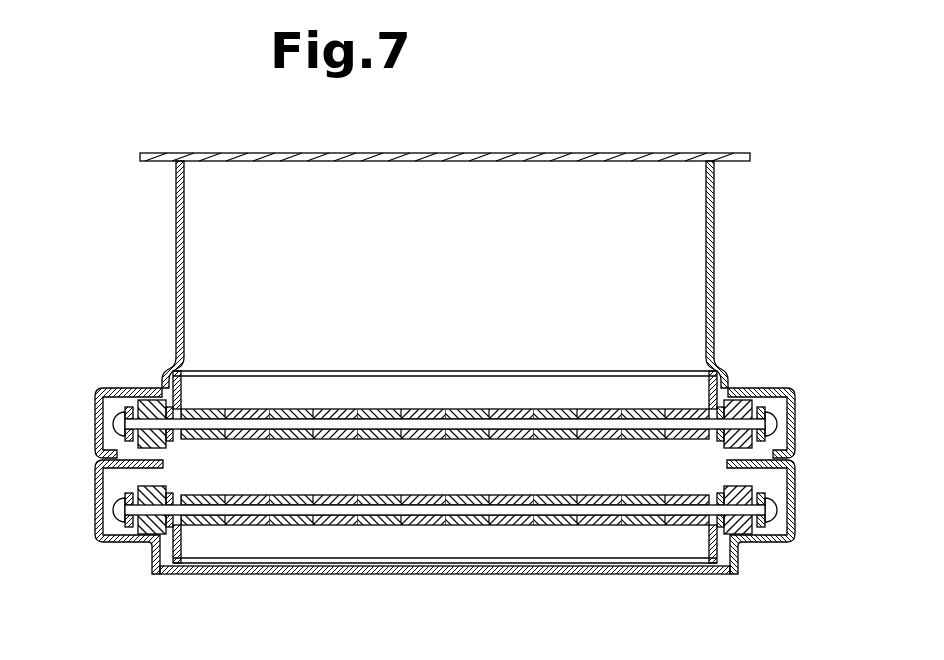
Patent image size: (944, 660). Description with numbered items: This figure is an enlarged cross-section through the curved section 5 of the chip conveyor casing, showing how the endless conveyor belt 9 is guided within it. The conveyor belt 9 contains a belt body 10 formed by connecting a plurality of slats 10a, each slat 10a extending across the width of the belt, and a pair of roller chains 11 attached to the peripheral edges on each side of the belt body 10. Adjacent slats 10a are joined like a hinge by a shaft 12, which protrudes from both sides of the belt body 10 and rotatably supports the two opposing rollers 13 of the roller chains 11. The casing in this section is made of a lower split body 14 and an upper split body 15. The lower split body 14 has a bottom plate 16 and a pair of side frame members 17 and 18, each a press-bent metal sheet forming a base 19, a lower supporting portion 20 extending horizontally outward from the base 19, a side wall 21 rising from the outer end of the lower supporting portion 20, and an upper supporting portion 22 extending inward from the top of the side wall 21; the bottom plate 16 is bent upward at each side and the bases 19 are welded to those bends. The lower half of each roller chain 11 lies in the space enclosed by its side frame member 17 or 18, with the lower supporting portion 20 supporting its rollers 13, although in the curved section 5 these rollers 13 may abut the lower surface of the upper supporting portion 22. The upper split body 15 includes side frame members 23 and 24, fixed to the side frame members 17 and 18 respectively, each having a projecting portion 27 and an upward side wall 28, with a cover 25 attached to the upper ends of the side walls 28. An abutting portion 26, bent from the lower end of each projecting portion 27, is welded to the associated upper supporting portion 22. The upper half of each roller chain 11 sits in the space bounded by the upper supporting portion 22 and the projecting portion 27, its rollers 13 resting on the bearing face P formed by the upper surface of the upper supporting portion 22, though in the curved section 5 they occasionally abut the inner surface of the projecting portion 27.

The curved section 5 is at (712, 118).
The conveyor belt 9 is at (476, 362).
The belt body 10 is at (378, 372).
The slat 10a is at (588, 388).
The roller chain 11 is at (146, 402).
The shaft 12 is at (786, 397).
The roller 13 is at (181, 402).
The lower split body 14 is at (830, 600).
The upper split body 15 is at (830, 135).
The bottom plate 16 is at (512, 575).
The side frame member 17 is at (112, 558).
The side frame member 18 is at (779, 559).
The base 19 is at (170, 565).
The lower supporting portion 20 is at (150, 546).
The side wall 21 is at (95, 512).
The upper supporting portion 22 is at (163, 472).
The side frame member 23 is at (168, 276).
The side frame member 24 is at (722, 294).
The cover 25 is at (470, 152).
The abutting portion 26 is at (97, 448).
The projecting portion 27 is at (100, 389).
The side wall 28 is at (176, 230).
The bearing face P is at (163, 463).